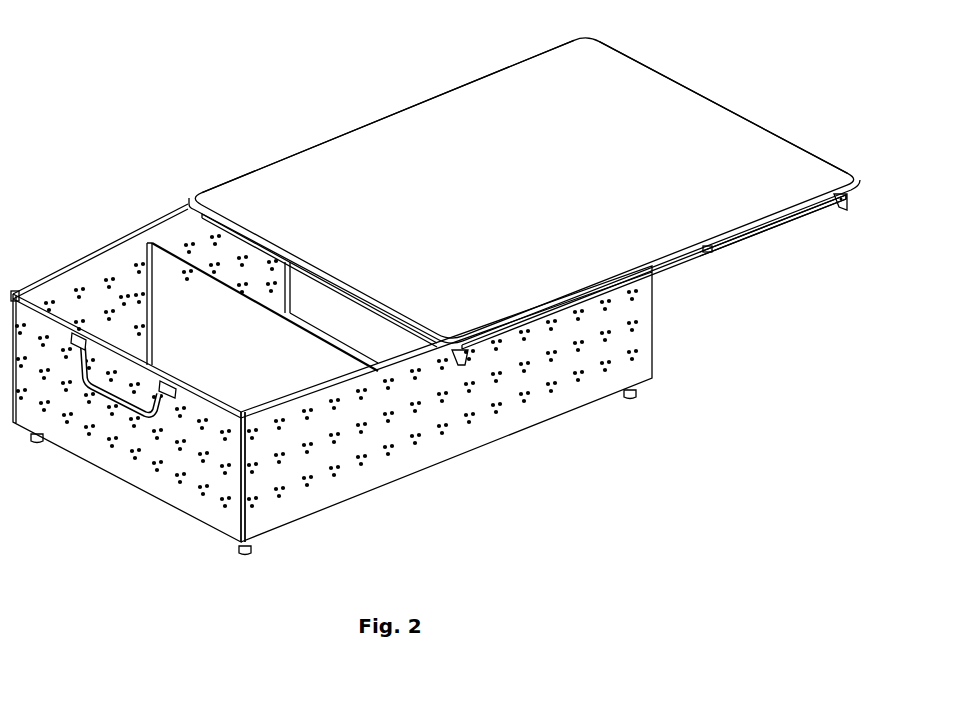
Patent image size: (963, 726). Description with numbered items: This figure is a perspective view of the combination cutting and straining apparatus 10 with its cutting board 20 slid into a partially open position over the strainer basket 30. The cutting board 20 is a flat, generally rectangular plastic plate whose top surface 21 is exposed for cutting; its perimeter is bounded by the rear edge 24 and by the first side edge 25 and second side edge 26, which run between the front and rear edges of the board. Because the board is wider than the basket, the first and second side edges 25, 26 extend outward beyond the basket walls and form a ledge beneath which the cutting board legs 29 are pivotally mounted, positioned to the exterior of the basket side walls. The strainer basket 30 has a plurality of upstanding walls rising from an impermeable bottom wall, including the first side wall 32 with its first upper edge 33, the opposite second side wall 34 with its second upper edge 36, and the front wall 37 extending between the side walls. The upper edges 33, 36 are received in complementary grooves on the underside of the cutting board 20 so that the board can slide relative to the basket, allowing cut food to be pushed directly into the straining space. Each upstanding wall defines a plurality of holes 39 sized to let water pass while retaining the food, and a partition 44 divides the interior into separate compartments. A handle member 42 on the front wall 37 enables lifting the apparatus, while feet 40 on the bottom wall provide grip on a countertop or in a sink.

The combination cutting and straining apparatus 10 is at (92, 103).
The cutting board 20 is at (524, 192).
The top surface 21 is at (476, 197).
The rear edge 24 is at (747, 116).
The first side edge 25 is at (688, 262).
The second side edge 26 is at (398, 110).
The cutting board legs 29 is at (783, 224).
The strainer basket 30 is at (331, 389).
The first side wall 32 is at (380, 472).
The first upper edge 33 is at (292, 398).
The second side wall 34 is at (105, 270).
The second upper edge 36 is at (55, 272).
The front wall 37 is at (127, 430).
The holes 39 is at (47, 410).
The feet 40 is at (245, 556).
The handle member 42 is at (103, 398).
The partition 44 is at (176, 283).